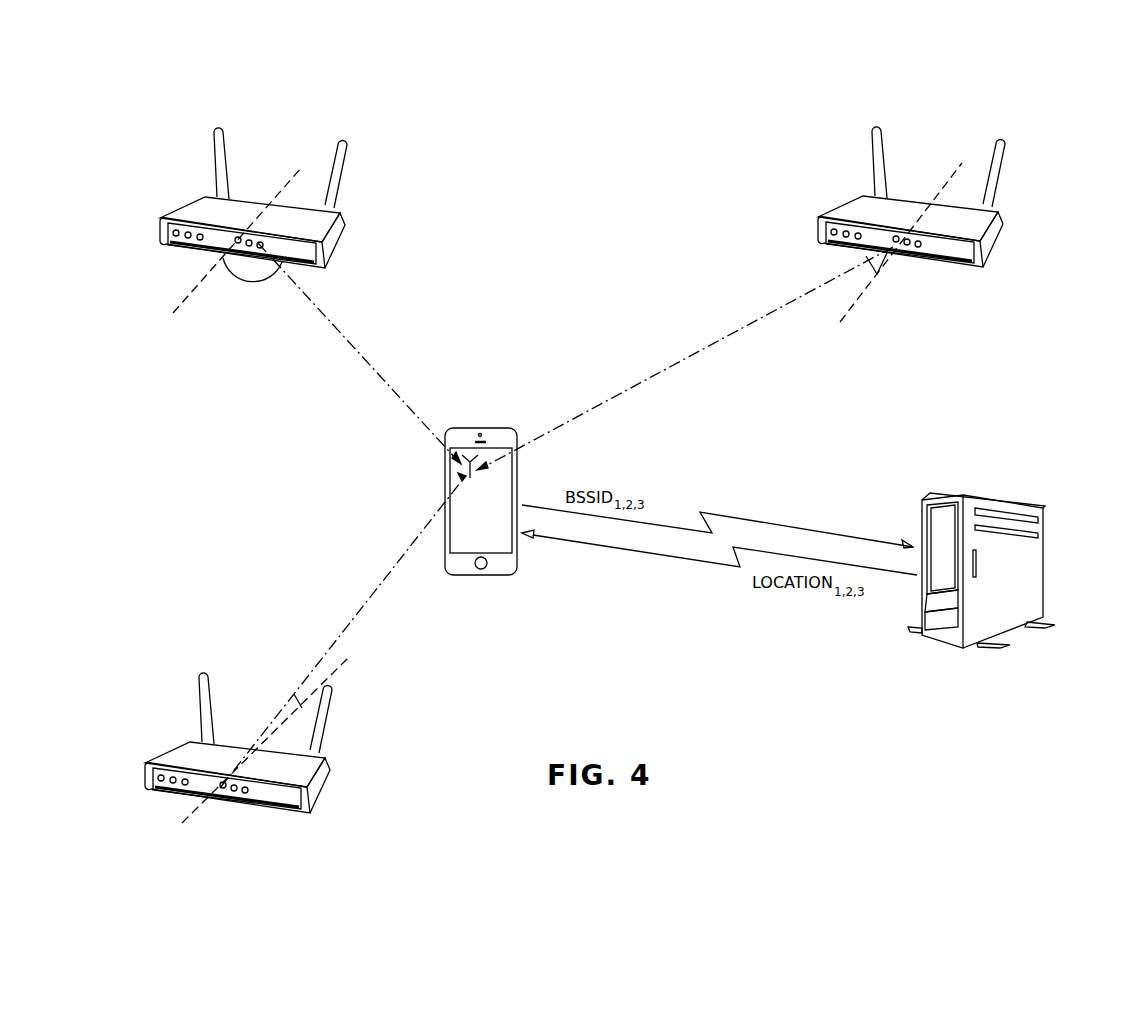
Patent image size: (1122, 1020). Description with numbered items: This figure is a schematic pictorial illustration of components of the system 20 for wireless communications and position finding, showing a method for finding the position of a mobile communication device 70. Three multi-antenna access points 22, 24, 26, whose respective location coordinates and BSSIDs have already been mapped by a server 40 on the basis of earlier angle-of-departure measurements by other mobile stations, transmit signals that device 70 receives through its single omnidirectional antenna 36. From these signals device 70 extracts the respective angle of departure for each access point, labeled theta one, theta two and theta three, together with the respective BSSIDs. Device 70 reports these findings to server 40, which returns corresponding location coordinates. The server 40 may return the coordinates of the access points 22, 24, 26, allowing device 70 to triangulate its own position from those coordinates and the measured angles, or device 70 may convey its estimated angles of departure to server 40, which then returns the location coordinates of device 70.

The system 20 is at (828, 740).
The access point 22 is at (343, 217).
The access point 24 is at (1000, 210).
The access point 26 is at (328, 757).
The antenna 36 is at (470, 458).
The server 40 is at (1043, 553).
The mobile communication device 70 is at (455, 567).